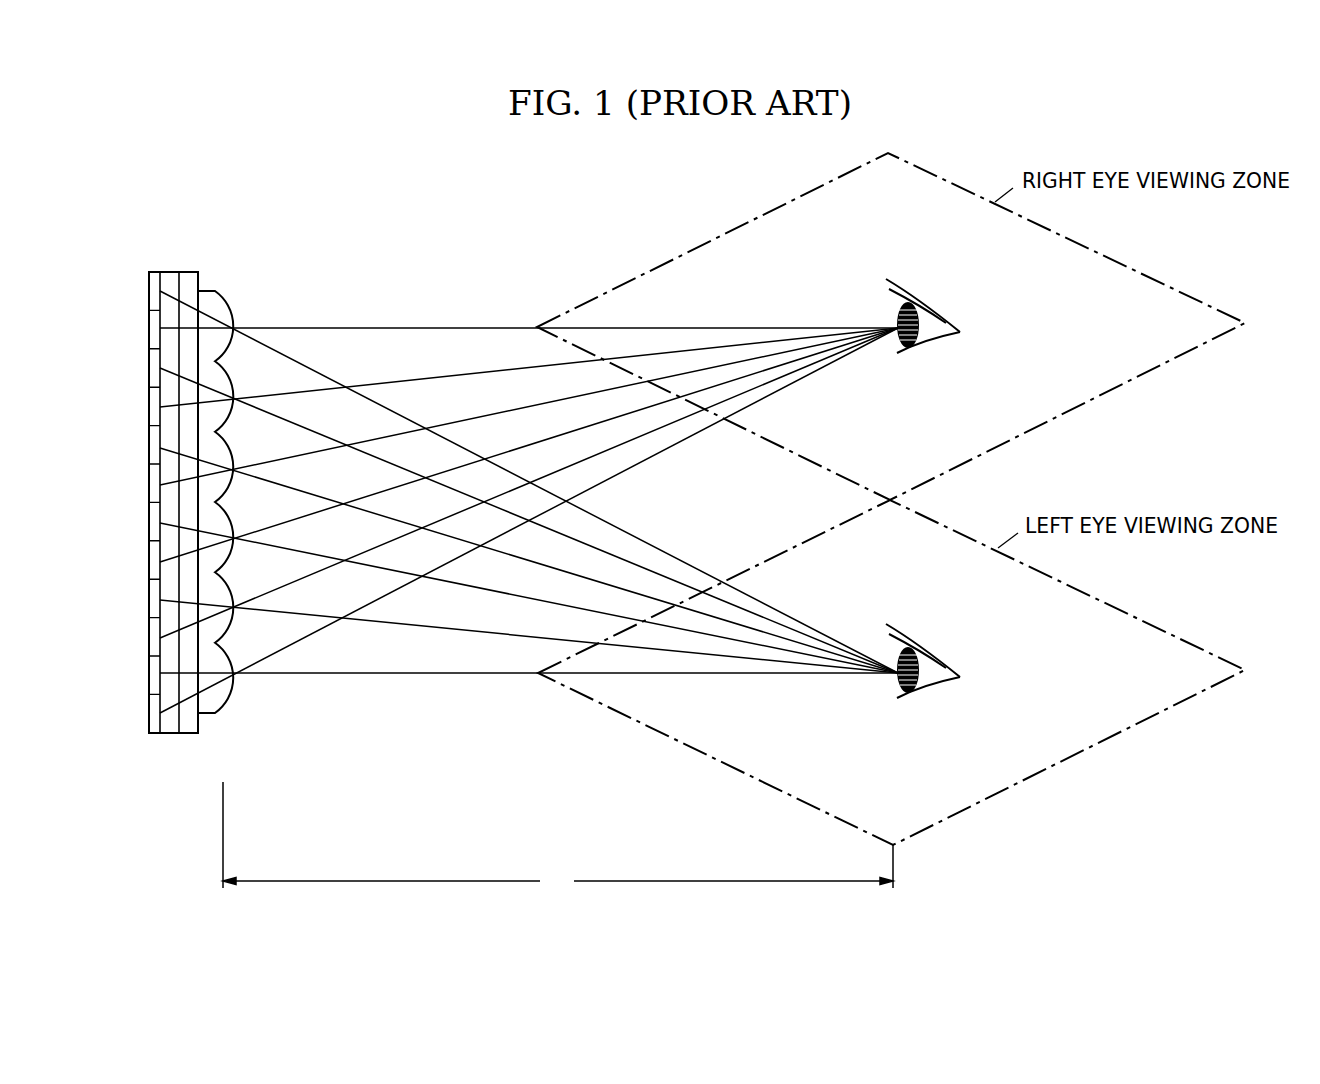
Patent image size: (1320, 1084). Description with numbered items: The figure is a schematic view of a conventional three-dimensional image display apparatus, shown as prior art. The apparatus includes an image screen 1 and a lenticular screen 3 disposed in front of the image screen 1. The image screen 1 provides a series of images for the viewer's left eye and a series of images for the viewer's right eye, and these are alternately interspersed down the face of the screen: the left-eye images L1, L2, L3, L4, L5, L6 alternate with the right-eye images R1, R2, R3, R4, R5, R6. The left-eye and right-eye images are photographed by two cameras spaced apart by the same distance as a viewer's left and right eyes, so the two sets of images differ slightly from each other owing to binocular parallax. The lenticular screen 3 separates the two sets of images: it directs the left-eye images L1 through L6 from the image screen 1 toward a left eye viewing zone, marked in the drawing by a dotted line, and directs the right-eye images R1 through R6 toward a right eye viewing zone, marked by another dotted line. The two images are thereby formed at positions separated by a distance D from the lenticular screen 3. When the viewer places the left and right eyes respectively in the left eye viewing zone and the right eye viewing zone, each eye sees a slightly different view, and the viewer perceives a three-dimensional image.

The image screen 1 is at (153, 733).
The lenticular screen 3 is at (225, 713).
The distance D is at (558, 838).
The image for the left eye L1 is at (507, 476).
The image for the right eye R1 is at (507, 330).
The image for the left eye L2 is at (507, 515).
The image for the right eye R2 is at (507, 373).
The image for the left eye L3 is at (507, 554).
The image for the right eye R3 is at (507, 412).
The image for the left eye L4 is at (507, 592).
The image for the right eye R4 is at (507, 451).
The image for the left eye L5 is at (507, 631).
The image for the right eye R5 is at (507, 489).
The image for the left eye L6 is at (507, 676).
The image for the right eye R6 is at (507, 527).